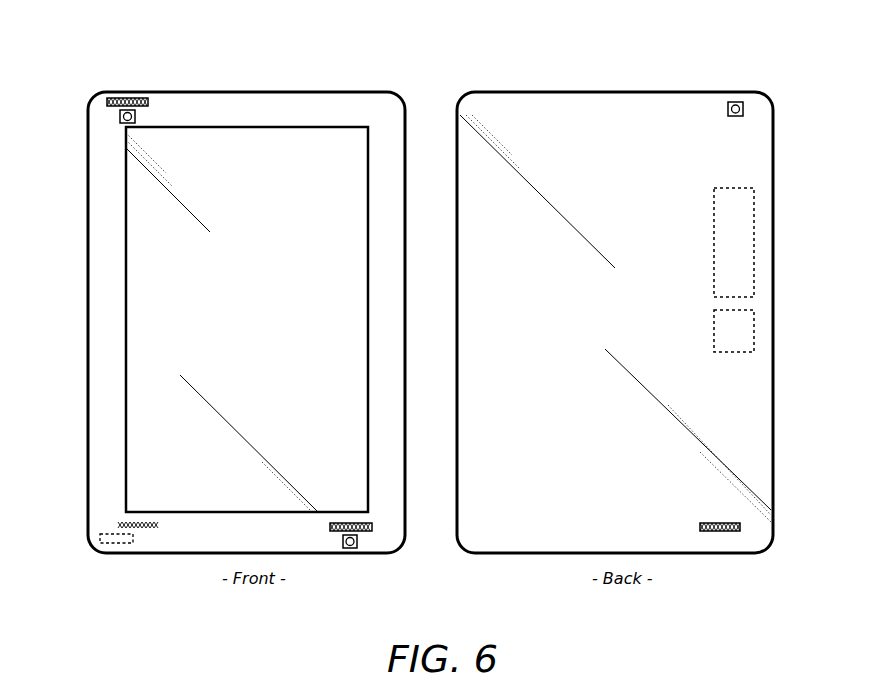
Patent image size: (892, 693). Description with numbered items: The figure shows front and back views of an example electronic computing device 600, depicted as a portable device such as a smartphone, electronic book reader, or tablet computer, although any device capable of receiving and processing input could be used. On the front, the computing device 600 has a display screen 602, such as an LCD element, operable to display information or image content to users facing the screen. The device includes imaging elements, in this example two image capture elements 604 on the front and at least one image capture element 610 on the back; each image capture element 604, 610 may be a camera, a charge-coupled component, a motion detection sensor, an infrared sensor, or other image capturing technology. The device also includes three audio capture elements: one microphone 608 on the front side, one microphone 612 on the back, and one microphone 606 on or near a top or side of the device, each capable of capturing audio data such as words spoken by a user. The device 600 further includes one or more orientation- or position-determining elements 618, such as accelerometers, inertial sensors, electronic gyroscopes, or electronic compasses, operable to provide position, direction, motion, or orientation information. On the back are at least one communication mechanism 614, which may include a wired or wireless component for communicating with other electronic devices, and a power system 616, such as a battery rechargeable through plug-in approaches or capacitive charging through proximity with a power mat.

The electronic computing device 600 is at (804, 100).
The display screen 602 is at (124, 238).
The image capture element 604 is at (119, 115).
The microphone 606 is at (135, 98).
The microphone 608 is at (365, 531).
The image capture element 610 is at (732, 102).
The microphone 612 is at (137, 528).
The communication mechanism 614 is at (754, 260).
The power system 616 is at (754, 333).
The orientation- or position-determining element 618 is at (115, 546).